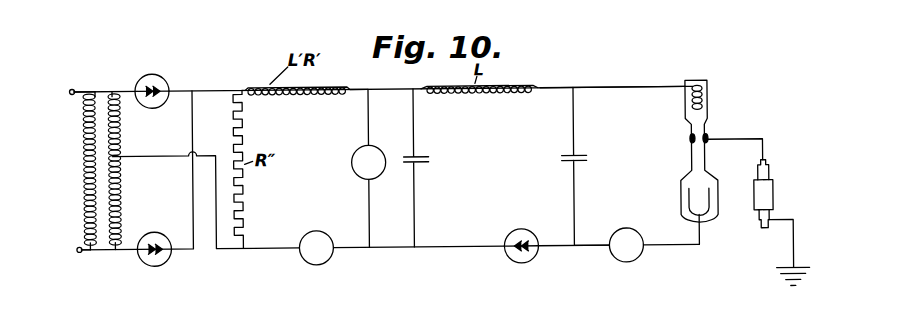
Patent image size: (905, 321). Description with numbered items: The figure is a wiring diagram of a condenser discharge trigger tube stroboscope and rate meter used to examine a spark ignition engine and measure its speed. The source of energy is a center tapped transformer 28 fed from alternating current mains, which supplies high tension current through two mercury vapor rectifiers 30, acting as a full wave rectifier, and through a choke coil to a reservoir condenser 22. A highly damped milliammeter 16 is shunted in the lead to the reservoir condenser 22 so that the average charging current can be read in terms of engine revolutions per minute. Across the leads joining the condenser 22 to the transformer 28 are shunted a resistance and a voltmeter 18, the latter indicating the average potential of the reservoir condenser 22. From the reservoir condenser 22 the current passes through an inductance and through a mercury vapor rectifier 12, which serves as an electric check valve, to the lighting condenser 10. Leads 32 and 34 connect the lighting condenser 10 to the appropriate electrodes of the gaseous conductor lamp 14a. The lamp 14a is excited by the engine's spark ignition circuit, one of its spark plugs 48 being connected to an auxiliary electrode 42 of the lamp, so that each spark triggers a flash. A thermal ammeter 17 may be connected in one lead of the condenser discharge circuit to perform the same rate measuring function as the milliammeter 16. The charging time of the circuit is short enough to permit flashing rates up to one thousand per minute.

The transformer 28 is at (103, 93).
The mercury vapor rectifiers 30 is at (158, 80).
The voltmeter 18 is at (357, 157).
The reservoir condenser 22 is at (425, 158).
The milliammeter 16 is at (312, 233).
The mercury vapor rectifier 12 is at (537, 224).
The lighting condenser 10 is at (582, 155).
The lead 34 is at (600, 90).
The lead 32 is at (596, 253).
The thermal ammeter 17 is at (636, 258).
The auxiliary electrode 42 is at (689, 144).
The gaseous conductor lamp 14a is at (707, 141).
The spark plug 48 is at (762, 200).